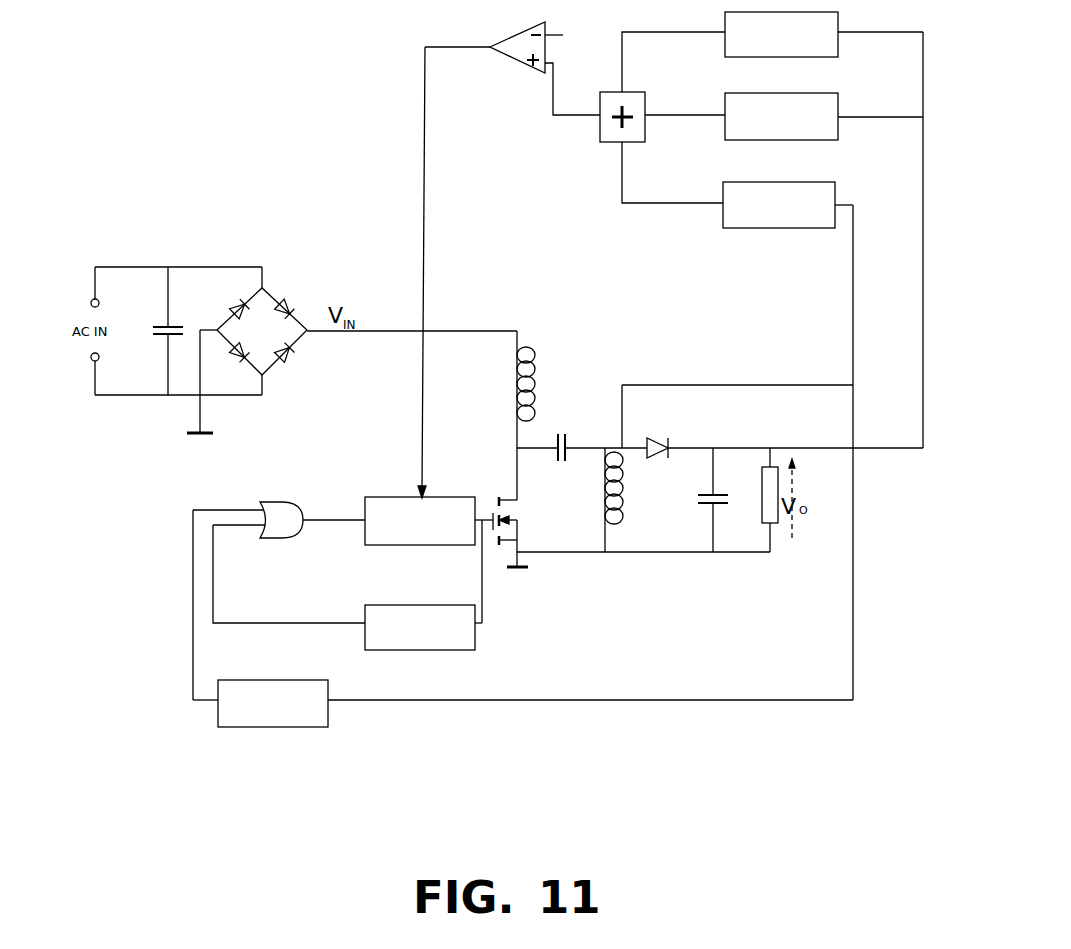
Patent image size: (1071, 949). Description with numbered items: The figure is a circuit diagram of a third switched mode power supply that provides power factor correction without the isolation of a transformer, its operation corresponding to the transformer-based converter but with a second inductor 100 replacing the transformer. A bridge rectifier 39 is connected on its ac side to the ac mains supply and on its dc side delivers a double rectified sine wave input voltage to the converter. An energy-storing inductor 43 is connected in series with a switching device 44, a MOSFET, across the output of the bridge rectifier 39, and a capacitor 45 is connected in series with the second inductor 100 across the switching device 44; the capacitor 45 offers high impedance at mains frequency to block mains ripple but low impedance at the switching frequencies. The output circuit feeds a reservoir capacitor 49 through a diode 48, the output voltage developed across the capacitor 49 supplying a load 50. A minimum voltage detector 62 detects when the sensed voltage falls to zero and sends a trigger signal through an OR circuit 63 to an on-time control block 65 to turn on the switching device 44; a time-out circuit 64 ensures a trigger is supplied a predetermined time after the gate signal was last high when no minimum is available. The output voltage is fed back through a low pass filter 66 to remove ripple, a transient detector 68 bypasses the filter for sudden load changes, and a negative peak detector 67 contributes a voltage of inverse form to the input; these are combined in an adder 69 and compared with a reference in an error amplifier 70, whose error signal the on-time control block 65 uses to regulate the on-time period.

The bridge rectifier 39 is at (299, 278).
The energy-storing inductor 43 is at (537, 384).
The switching device 44 is at (493, 512).
The capacitor 45 is at (566, 435).
The diode 48 is at (653, 436).
The reservoir capacitor 49 is at (708, 496).
The load 50 is at (760, 484).
The minimum voltage detector 62 is at (310, 728).
The OR circuit 63 is at (285, 535).
The time-out circuit 64 is at (412, 603).
The on-time control block 65 is at (395, 547).
The low pass filter 66 is at (820, 143).
The negative peak detector 67 is at (820, 230).
The transient detector 68 is at (820, 60).
The adder 69 is at (605, 143).
The error amplifier 70 is at (527, 68).
The second inductor 100 is at (605, 483).